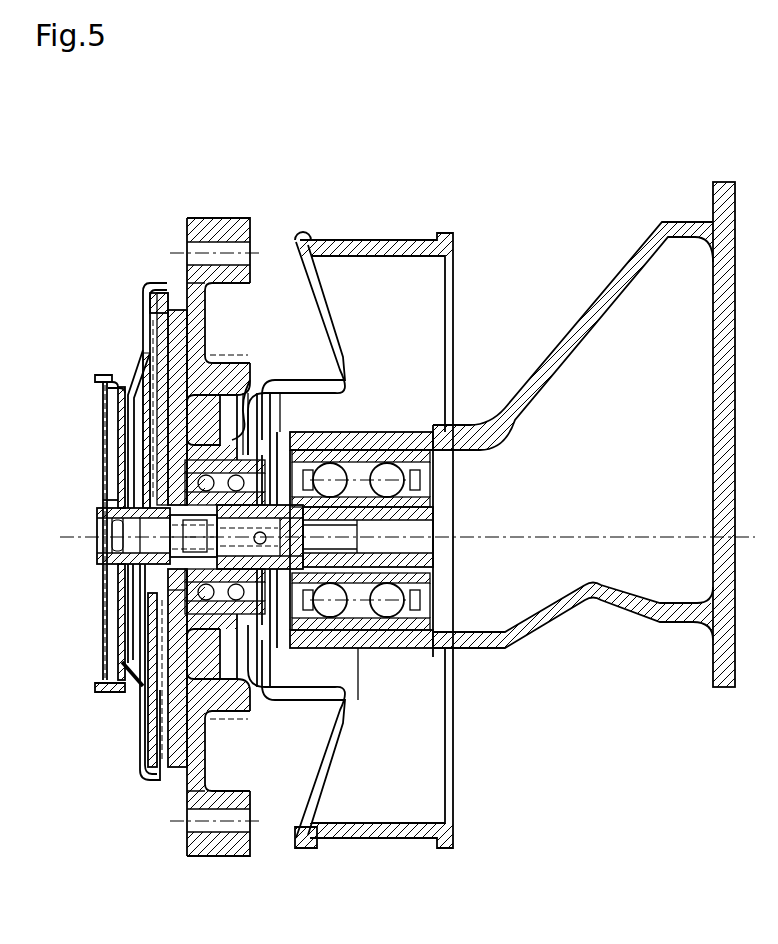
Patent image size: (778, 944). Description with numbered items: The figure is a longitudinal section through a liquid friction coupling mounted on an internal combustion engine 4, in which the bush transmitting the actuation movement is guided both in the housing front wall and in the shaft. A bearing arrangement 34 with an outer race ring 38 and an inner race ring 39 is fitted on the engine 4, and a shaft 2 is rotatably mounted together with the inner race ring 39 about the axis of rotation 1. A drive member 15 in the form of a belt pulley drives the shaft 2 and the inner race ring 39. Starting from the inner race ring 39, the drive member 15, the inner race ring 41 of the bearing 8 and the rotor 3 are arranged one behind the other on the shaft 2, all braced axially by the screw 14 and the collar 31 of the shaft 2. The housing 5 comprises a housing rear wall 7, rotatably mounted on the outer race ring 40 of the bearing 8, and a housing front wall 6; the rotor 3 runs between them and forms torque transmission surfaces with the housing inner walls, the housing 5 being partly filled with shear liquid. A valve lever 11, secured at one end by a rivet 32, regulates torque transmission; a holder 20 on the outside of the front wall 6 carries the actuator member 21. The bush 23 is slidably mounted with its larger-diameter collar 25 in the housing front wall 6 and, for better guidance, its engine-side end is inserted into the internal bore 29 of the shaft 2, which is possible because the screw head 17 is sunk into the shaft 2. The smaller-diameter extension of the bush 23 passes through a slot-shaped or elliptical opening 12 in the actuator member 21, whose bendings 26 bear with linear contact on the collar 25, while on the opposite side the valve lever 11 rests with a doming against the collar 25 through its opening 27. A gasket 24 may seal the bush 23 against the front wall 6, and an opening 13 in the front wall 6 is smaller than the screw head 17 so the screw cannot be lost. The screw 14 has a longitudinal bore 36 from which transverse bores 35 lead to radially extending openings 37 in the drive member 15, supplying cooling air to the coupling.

The axis of rotation 1 is at (653, 542).
The shaft 2 is at (262, 690).
The rotor 3 is at (172, 733).
The internal combustion engine 4 is at (660, 222).
The housing 5 is at (113, 192).
The housing front wall 6 is at (146, 333).
The housing rear wall 7 is at (185, 786).
The bearing 8 is at (236, 605).
The valve lever 11 is at (172, 300).
The opening 12 is at (102, 497).
The opening 13 is at (103, 578).
The screw 14 is at (293, 513).
The drive member 15 is at (385, 240).
The screw head 17 is at (175, 585).
The holder 20 is at (118, 390).
The actuator member 21 is at (103, 398).
The bush 23 is at (190, 492).
The gasket 24 is at (207, 508).
The collar 25 is at (100, 505).
The bendings 26 is at (100, 536).
The opening 27 is at (129, 398).
The internal bore 29 is at (249, 380).
The collar 31 is at (145, 492).
The rivet 32 is at (130, 672).
The bearing arrangement 34 is at (447, 478).
The transverse bores 35 is at (405, 513).
The longitudinal bore 36 is at (383, 432).
The radially extending openings 37 is at (270, 688).
The outer race ring 38 is at (436, 452).
The inner race ring 39 is at (405, 580).
The outer race ring 40 is at (295, 428).
The inner race ring 41 is at (305, 428).